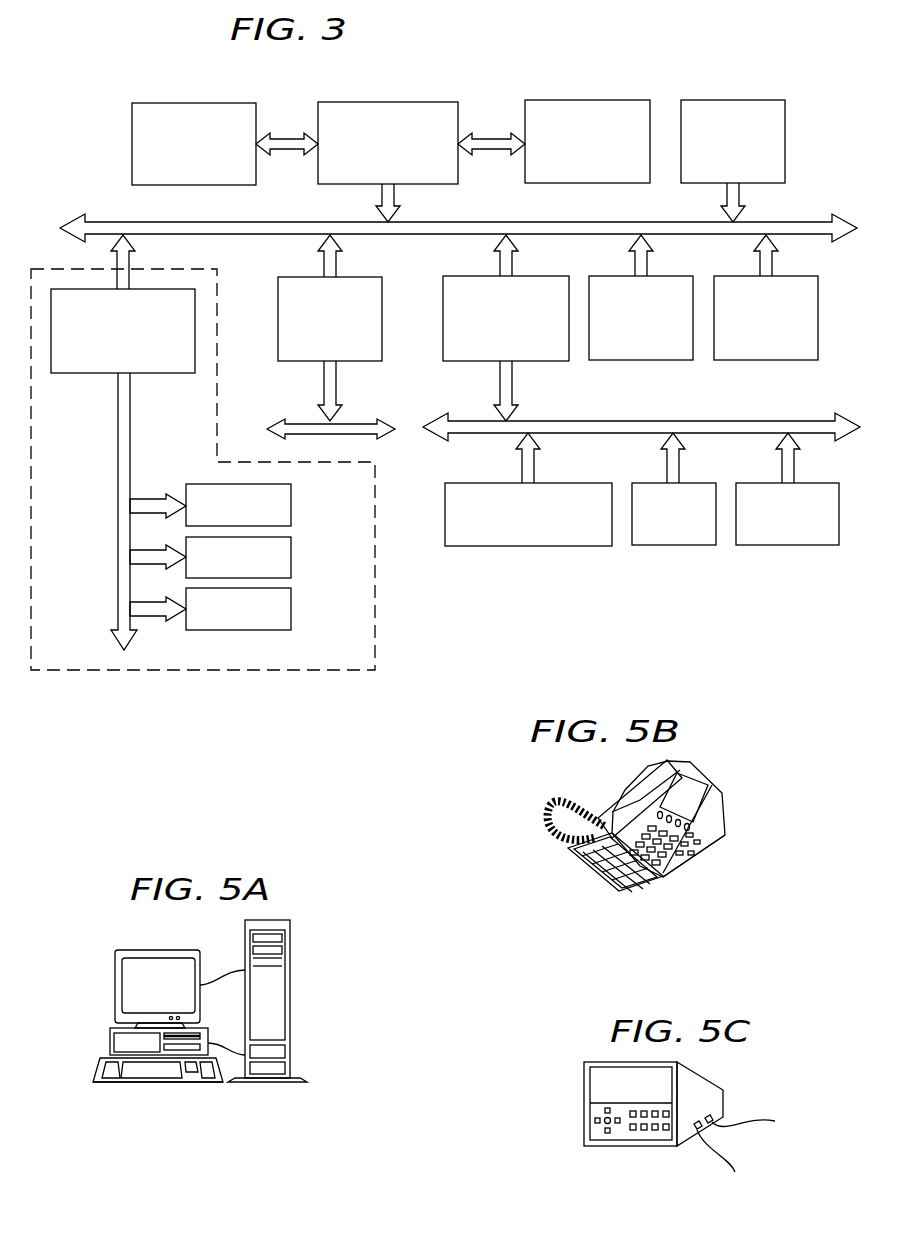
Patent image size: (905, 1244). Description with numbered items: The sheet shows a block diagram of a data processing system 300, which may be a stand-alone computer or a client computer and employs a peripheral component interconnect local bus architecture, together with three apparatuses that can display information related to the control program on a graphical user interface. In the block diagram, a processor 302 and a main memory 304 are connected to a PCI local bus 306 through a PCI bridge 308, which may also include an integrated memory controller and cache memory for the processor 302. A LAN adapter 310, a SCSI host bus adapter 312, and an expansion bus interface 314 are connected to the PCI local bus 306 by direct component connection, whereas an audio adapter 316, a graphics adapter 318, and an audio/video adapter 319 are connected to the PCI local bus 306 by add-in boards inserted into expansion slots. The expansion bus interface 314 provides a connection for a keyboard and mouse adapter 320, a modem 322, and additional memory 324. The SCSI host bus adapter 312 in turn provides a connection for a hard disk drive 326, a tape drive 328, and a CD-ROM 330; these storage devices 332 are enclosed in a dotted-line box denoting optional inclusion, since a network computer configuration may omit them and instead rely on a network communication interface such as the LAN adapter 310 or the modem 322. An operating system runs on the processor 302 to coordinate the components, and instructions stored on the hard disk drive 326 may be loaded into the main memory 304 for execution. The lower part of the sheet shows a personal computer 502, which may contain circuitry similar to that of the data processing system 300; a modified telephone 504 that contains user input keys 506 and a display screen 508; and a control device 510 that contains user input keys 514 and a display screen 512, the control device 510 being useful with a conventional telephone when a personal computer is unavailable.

In FIG. 3, the data processing system 300 is at (78, 96).
In FIG. 3, the processor 302 is at (196, 103).
In FIG. 3, the main memory 304 is at (585, 100).
In FIG. 3, the PCI local bus 306 is at (258, 236).
In FIG. 3, the PCI bridge 308 is at (392, 102).
In FIG. 3, the LAN adapter 310 is at (305, 362).
In FIG. 3, the SCSI host bus adapter 312 is at (99, 374).
In FIG. 3, the expansion bus interface 314 is at (533, 362).
In FIG. 3, the audio adapter 316 is at (733, 100).
In FIG. 3, the graphics adapter 318 is at (641, 361).
In FIG. 3, the audio/video adapter 319 is at (766, 361).
In FIG. 3, the keyboard and mouse adapter 320 is at (528, 547).
In FIG. 3, the modem 322 is at (673, 546).
In FIG. 3, the additional memory 324 is at (788, 546).
In FIG. 3, the hard disk drive 326 is at (291, 505).
In FIG. 3, the tape drive 328 is at (291, 557).
In FIG. 3, the CD-ROM 330 is at (291, 609).
In FIG. 3, the storage devices 332 is at (375, 565).
In FIG. 5A, the personal computer 502 is at (209, 1103).
In FIG. 5B, the modified telephone 504 is at (639, 836).
In FIG. 5B, the user input keys 506 is at (595, 873).
In FIG. 5B, the display screen 508 is at (688, 790).
In FIG. 5C, the control device 510 is at (688, 1143).
In FIG. 5C, the display screen 512 is at (596, 1090).
In FIG. 5C, the user input keys 514 is at (580, 1108).